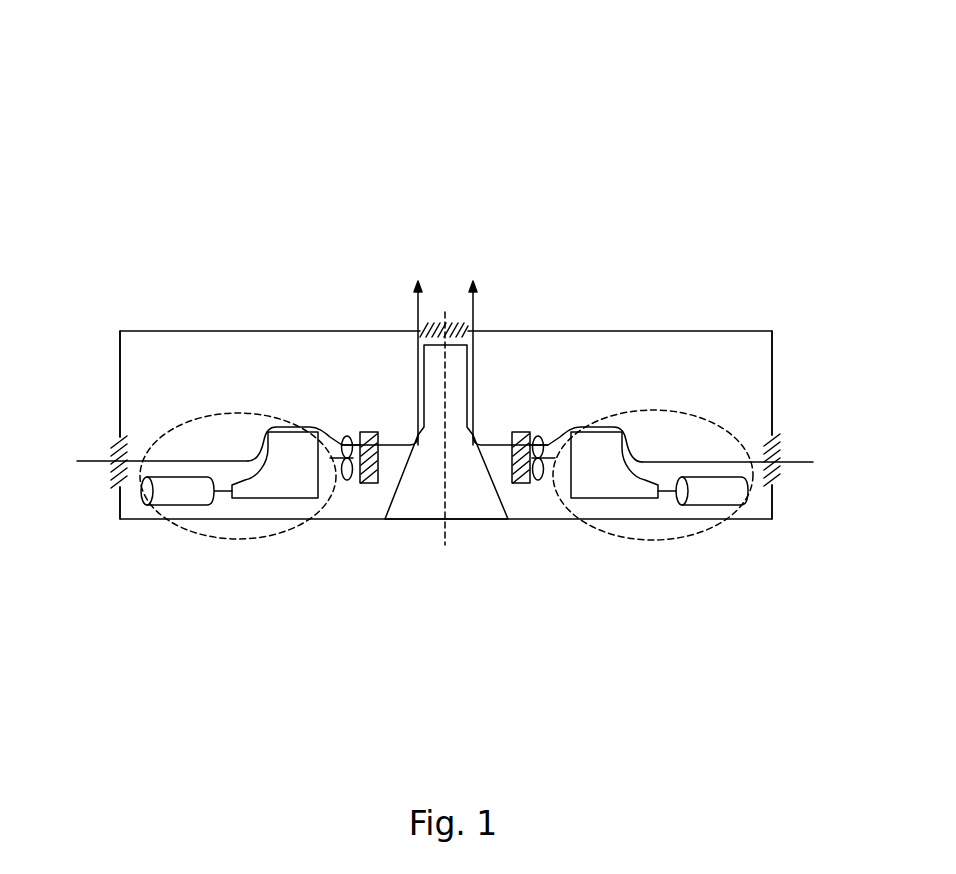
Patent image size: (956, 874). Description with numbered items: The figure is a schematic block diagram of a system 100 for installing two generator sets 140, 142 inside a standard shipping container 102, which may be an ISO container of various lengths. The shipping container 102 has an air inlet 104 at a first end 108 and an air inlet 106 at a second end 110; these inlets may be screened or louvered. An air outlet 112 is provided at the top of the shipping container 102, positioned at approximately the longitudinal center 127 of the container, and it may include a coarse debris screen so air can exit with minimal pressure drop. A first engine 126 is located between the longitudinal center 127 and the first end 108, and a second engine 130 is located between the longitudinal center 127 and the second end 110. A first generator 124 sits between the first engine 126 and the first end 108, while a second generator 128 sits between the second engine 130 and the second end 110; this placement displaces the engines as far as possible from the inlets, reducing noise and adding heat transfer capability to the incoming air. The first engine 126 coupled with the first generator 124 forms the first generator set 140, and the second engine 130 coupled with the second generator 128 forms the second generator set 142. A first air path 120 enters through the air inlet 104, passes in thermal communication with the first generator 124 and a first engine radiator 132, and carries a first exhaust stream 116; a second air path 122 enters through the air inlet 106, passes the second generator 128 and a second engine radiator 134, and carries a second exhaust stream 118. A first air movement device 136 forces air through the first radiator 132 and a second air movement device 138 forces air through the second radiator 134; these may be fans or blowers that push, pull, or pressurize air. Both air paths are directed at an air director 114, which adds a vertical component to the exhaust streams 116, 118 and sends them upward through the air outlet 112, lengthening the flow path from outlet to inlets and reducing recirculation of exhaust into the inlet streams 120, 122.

The system 100 is at (191, 77).
The shipping container 102 is at (711, 328).
The air inlet 104 is at (781, 438).
The air inlet 106 is at (108, 450).
The first end 108 is at (796, 346).
The second end 110 is at (94, 348).
The air outlet 112 is at (453, 320).
The air director 114 is at (420, 500).
The first exhaust stream 116 is at (500, 443).
The second exhaust stream 118 is at (393, 443).
The first air path 120 is at (793, 463).
The second air path 122 is at (96, 467).
The first generator 124 is at (738, 507).
The first engine 126 is at (583, 498).
The longitudinal center 127 is at (447, 537).
The second generator 128 is at (153, 507).
The second engine 130 is at (315, 505).
The first engine radiator 132 is at (536, 432).
The second engine radiator 134 is at (365, 430).
The first air movement device 136 is at (558, 428).
The second air movement device 138 is at (332, 429).
The first generator set 140 is at (652, 540).
The second generator set 142 is at (227, 540).